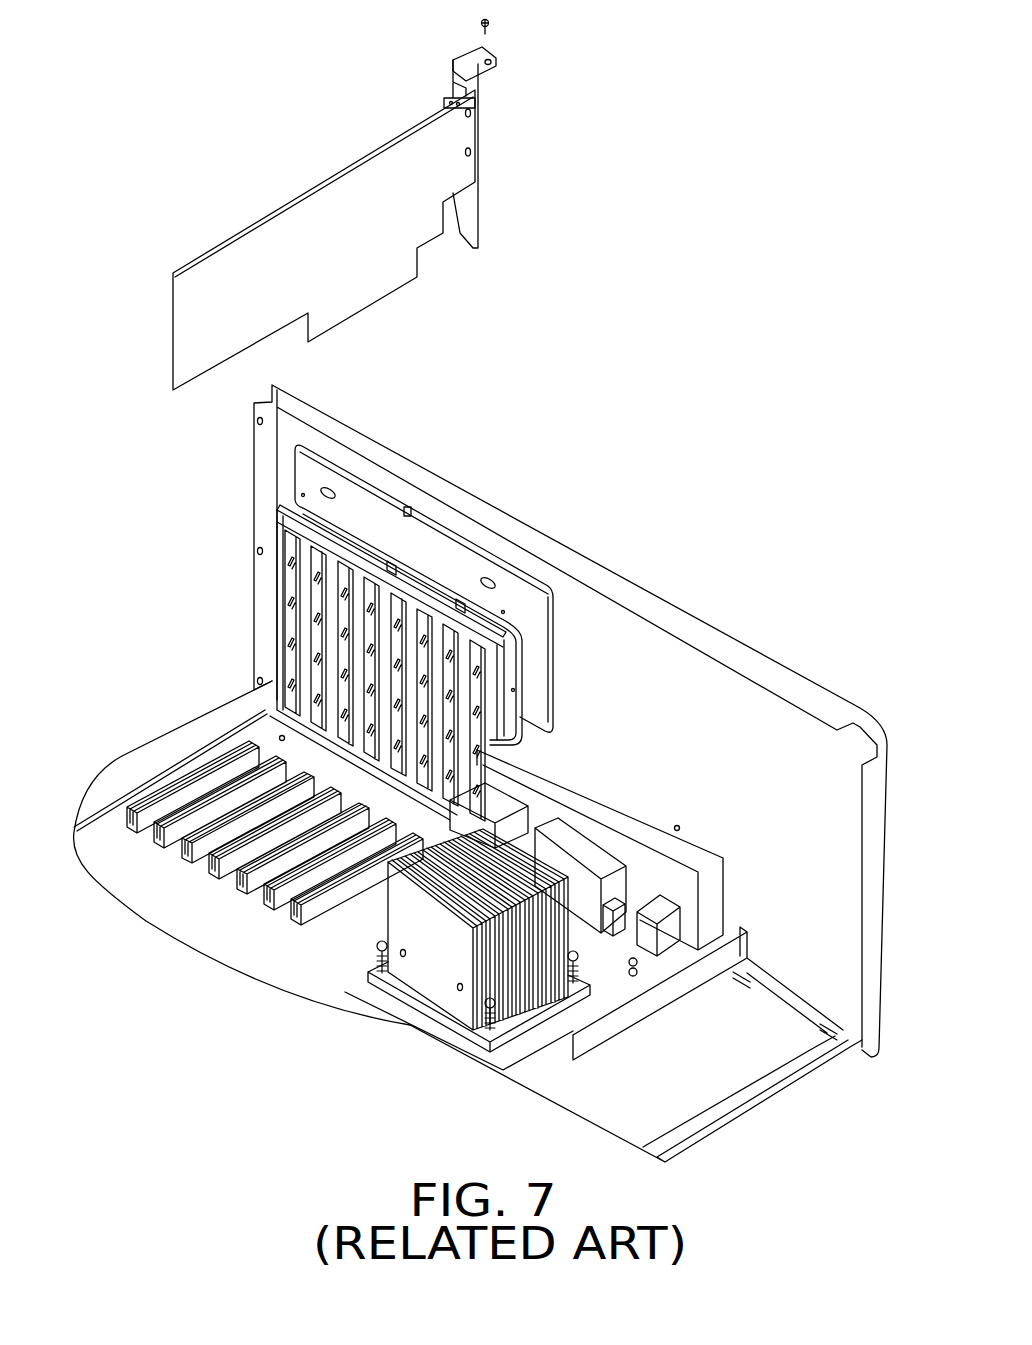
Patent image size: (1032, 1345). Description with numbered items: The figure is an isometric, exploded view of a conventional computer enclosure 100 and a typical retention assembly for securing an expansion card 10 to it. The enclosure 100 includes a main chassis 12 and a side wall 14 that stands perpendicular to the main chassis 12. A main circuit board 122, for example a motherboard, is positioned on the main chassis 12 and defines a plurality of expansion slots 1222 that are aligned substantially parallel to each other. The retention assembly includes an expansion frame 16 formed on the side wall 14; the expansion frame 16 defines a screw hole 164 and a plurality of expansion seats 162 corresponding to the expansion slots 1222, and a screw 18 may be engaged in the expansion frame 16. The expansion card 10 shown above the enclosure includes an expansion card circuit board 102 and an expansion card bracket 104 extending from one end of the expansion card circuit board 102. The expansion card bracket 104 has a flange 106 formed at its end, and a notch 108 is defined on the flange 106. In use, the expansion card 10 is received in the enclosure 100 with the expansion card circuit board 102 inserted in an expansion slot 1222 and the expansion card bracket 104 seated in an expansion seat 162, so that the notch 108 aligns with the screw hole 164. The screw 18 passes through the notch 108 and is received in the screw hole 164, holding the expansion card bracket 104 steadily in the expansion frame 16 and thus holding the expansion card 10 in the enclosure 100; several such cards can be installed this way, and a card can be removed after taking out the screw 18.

The expansion card 10 is at (372, 208).
The expansion card circuit board 102 is at (398, 275).
The expansion card bracket 104 is at (490, 137).
The flange 106 is at (466, 52).
The notch 108 is at (492, 61).
The screw 18 is at (491, 21).
The computer enclosure 100 is at (482, 786).
The side wall 14 is at (788, 753).
The expansion frame 16 is at (447, 676).
The expansion seat 162 is at (320, 622).
The screw hole 164 is at (322, 522).
The main chassis 12 is at (468, 934).
The main circuit board 122 is at (377, 912).
The expansion slot 1222 is at (219, 777).